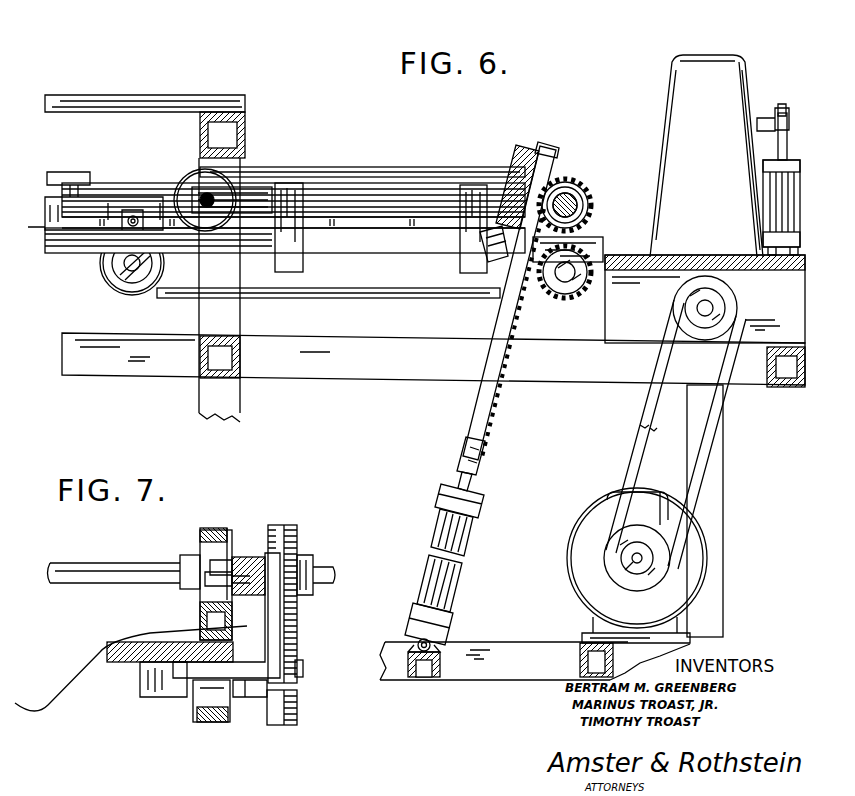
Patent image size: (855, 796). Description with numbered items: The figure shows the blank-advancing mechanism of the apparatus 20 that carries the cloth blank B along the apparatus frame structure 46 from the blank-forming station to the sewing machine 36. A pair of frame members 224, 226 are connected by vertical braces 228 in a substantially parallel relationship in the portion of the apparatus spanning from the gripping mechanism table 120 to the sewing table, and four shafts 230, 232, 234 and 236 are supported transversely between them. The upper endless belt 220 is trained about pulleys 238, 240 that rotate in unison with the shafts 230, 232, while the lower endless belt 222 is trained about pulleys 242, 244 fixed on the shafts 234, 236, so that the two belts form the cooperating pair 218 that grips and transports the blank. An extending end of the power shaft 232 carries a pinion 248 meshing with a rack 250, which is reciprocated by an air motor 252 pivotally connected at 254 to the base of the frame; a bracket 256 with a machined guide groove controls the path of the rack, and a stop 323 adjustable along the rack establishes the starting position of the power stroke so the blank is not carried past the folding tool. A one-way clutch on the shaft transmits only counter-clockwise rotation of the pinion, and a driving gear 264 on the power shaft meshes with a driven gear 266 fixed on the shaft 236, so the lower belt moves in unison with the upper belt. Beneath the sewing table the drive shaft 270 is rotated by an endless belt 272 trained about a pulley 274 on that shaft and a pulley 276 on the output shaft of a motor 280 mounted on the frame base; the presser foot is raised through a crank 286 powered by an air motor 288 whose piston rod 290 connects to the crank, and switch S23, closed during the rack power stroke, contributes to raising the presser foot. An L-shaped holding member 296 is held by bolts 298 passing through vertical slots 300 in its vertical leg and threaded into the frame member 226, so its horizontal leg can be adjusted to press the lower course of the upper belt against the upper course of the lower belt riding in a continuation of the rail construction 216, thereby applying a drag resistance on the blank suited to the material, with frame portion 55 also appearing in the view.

In FIG. 6, the apparatus 20 is at (98, 77).
In FIG. 6, the sewing machine 36 is at (696, 50).
In FIG. 6, the apparatus frame structure 46 is at (296, 380).
In FIG. 6, the frame box 55 is at (763, 270).
In FIG. 7, the gripping mechanism table 120 is at (115, 662).
In FIG. 6, the rail 216 is at (372, 248).
In FIG. 7, the rail 216 is at (200, 640).
In FIG. 6, the rail assembly 218 is at (367, 129).
In FIG. 6, the upper endless belt 220 is at (372, 168).
In FIG. 7, the upper endless belt 220 is at (218, 528).
In FIG. 6, the lower endless belt 222 is at (372, 298).
In FIG. 7, the lower endless belt 222 is at (220, 724).
In FIG. 6, the frame member 224 is at (415, 250).
In FIG. 6, the frame member 226 is at (398, 200).
In FIG. 7, the frame member 226 is at (245, 557).
In FIG. 6, the vertical brace 228 is at (292, 190).
In FIG. 7, the vertical brace 228 is at (278, 553).
In FIG. 6, the shaft 230 is at (203, 188).
In FIG. 6, the power shaft 232 is at (582, 208).
In FIG. 7, the power shaft 232 is at (60, 562).
In FIG. 6, the shaft 234 is at (125, 268).
In FIG. 6, the shaft 236 is at (572, 272).
In FIG. 7, the shaft 236 is at (303, 667).
In FIG. 6, the pulley 238 is at (190, 195).
In FIG. 7, the pulley 240 is at (207, 528).
In FIG. 6, the pulley 242 is at (125, 298).
In FIG. 7, the pulley 244 is at (205, 700).
In FIG. 6, the pinion 248 is at (580, 196).
In FIG. 6, the rack 250 is at (482, 405).
In FIG. 6, the air motor 252 is at (445, 522).
In FIG. 6, the pivotal connection 254 is at (418, 645).
In FIG. 6, the bracket 256 is at (523, 160).
In FIG. 6, the driving gear 264 is at (580, 180).
In FIG. 7, the driving gear 264 is at (297, 532).
In FIG. 6, the driven gear 266 is at (574, 292).
In FIG. 7, the driven gear 266 is at (288, 726).
In FIG. 6, the drive shaft 270 is at (700, 310).
In FIG. 6, the endless belt 272 is at (642, 400).
In FIG. 6, the pulley 274 is at (698, 338).
In FIG. 6, the pulley 276 is at (625, 576).
In FIG. 6, the motor 280 is at (572, 557).
In FIG. 6, the crank 286 is at (768, 116).
In FIG. 6, the air motor 288 is at (780, 205).
In FIG. 6, the piston rod 290 is at (778, 147).
In FIG. 6, the L-shaped holding member 296 is at (402, 222).
In FIG. 7, the L-shaped holding member 296 is at (235, 610).
In FIG. 7, the bolt 298 is at (210, 578).
In FIG. 7, the vertical slot 300 is at (212, 565).
In FIG. 6, the stop 323 is at (462, 456).
In FIG. 6, the switch S23 is at (482, 248).
In FIG. 7, the cloth blank B is at (48, 708).